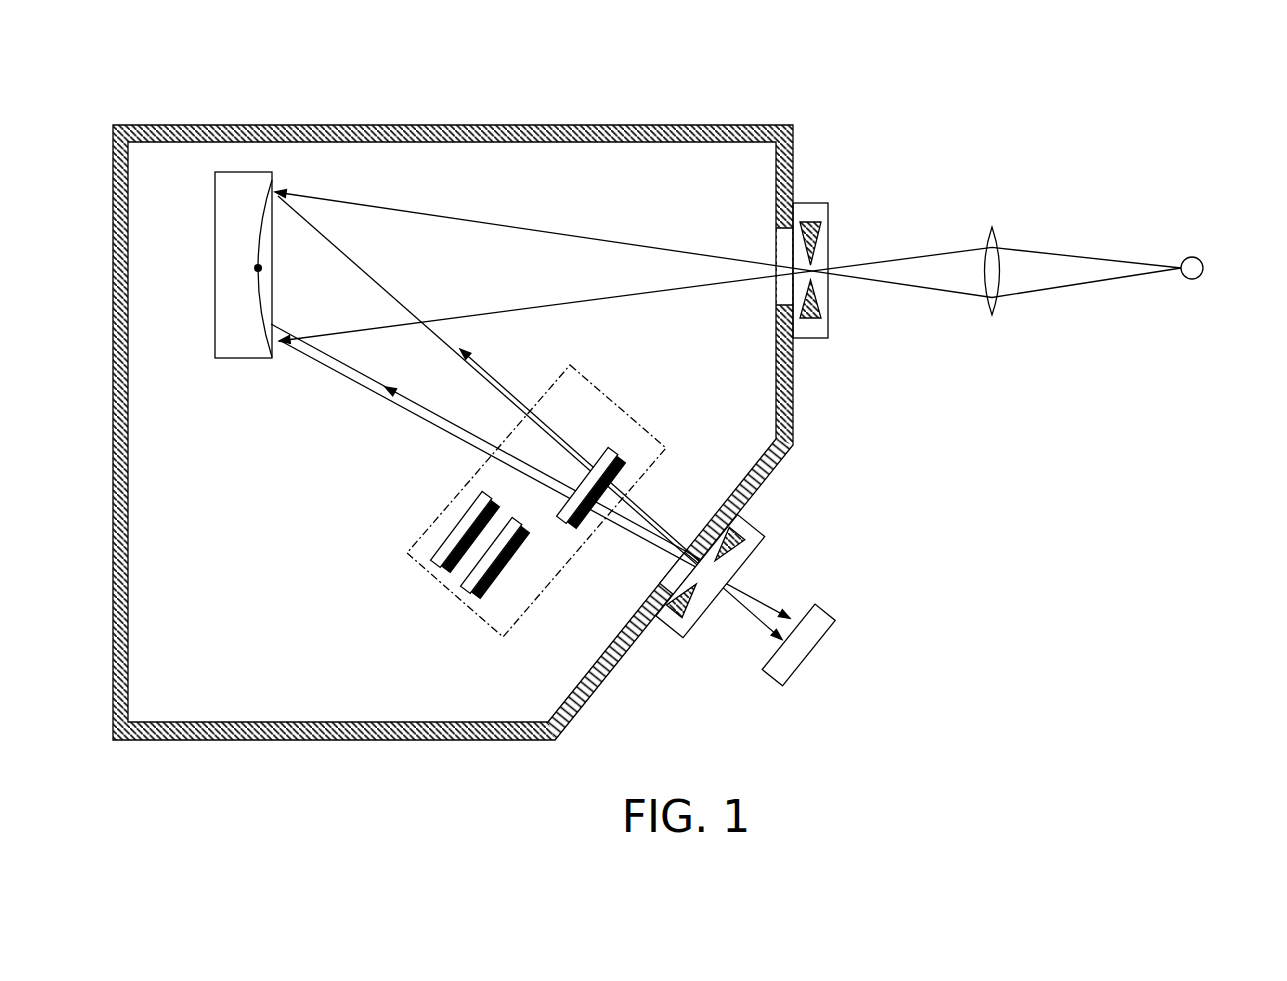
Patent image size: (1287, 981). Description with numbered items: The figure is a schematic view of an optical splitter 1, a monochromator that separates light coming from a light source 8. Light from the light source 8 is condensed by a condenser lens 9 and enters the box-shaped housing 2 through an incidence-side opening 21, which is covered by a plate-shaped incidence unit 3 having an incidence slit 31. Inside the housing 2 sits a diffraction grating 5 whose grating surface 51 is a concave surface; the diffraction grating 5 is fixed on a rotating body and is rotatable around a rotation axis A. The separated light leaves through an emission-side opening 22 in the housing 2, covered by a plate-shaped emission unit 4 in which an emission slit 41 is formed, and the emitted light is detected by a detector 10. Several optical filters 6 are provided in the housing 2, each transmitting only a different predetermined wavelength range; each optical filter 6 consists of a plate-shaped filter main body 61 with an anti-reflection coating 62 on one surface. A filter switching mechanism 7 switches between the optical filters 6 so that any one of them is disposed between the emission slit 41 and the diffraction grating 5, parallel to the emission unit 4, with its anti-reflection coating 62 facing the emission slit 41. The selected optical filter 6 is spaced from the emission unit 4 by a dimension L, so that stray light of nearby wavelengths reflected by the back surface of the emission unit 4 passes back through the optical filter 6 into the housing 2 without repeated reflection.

The optical splitter 1 is at (689, 378).
The housing 2 is at (418, 124).
The incidence-side opening 21 is at (778, 236).
The emission-side opening 22 is at (664, 578).
The incidence unit 3 is at (844, 237).
The incidence slit 31 is at (822, 278).
The emission unit 4 is at (744, 565).
The emission slit 41 is at (701, 590).
The diffraction grating 5 is at (301, 304).
The grating surface 51 is at (279, 201).
The optical filter 6 is at (510, 520).
The filter main body 61 is at (432, 566).
The anti-reflection coating 62 is at (446, 569).
The filter switching mechanism 7 is at (515, 634).
The light source 8 is at (1203, 259).
The condenser lens 9 is at (998, 242).
The detector 10 is at (816, 605).
The rotation axis A is at (263, 268).
The dimension L is at (656, 500).